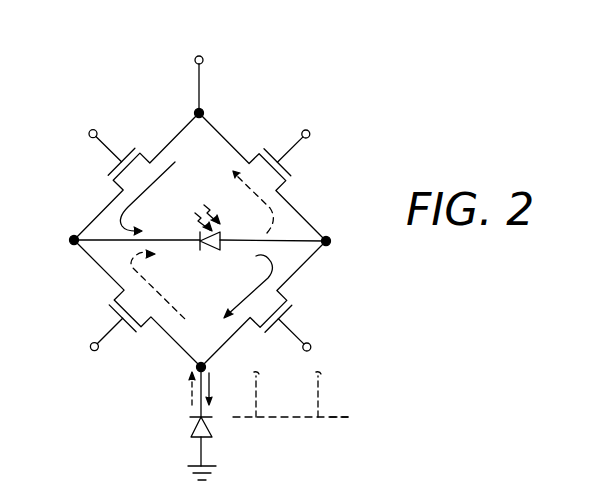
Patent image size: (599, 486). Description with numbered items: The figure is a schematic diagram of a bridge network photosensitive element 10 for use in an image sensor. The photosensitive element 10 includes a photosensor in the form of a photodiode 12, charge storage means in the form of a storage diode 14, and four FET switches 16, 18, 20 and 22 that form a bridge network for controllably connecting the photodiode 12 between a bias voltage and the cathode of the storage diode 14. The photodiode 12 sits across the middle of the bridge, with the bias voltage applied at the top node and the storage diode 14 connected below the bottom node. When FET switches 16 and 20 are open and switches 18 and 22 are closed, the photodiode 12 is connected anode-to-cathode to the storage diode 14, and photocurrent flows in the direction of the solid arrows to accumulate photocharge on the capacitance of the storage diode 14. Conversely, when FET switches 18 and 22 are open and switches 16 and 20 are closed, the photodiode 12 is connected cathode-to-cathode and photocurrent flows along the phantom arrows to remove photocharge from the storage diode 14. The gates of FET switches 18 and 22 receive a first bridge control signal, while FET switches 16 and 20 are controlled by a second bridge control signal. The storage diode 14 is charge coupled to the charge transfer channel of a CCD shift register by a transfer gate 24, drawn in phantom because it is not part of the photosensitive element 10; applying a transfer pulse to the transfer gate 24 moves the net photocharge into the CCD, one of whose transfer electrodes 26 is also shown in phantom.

The photosensitive element 10 is at (275, 82).
The photodiode 12 is at (224, 248).
The storage diode 14 is at (194, 427).
The FET switch 16 is at (292, 174).
The FET switch 18 is at (294, 300).
The FET switch 20 is at (104, 298).
The FET switch 22 is at (110, 172).
The transfer gate 24 is at (264, 416).
The transfer electrode 26 is at (340, 417).